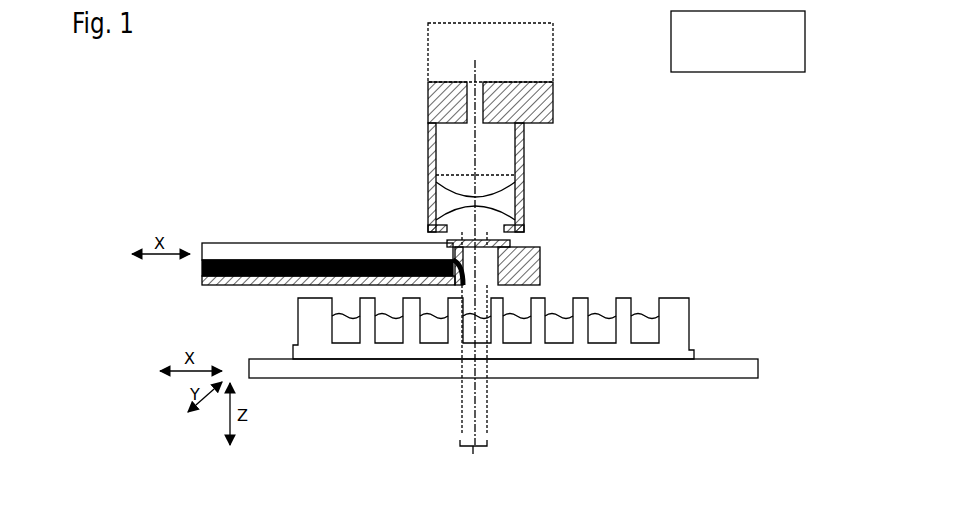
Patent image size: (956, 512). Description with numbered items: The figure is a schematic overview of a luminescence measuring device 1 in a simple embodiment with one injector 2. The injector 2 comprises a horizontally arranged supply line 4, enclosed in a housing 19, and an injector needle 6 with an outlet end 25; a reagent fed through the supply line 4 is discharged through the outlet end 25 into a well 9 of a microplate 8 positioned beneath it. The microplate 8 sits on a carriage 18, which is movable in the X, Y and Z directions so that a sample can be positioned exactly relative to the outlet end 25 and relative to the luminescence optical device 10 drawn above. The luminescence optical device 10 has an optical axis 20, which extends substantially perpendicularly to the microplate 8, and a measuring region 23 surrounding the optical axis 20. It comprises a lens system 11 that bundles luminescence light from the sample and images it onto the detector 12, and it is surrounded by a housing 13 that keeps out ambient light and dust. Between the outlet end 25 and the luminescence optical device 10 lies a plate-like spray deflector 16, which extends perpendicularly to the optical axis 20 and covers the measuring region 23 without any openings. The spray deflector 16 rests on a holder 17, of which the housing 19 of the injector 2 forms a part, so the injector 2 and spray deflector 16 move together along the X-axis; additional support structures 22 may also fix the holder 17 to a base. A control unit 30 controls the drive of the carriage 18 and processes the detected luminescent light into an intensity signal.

The luminescence measuring device 1 is at (284, 69).
The injector 2 is at (305, 309).
The supply line 4 is at (283, 266).
The injector needle 6 is at (396, 352).
The microplate 8 is at (487, 308).
The well 9 is at (650, 292).
The luminescence optical device 10 is at (515, 131).
The lens system 11 is at (493, 212).
The detector 12 is at (539, 50).
The housing 13 is at (524, 143).
The spray deflector 16 is at (541, 270).
The holder 17 is at (512, 245).
The carriage 18 is at (282, 362).
The housing 19 is at (230, 250).
The optical axis 20 is at (478, 392).
The support structures 22 is at (230, 286).
The measuring region 23 is at (473, 466).
The outlet end 25 is at (463, 279).
The control unit 30 is at (751, 51).